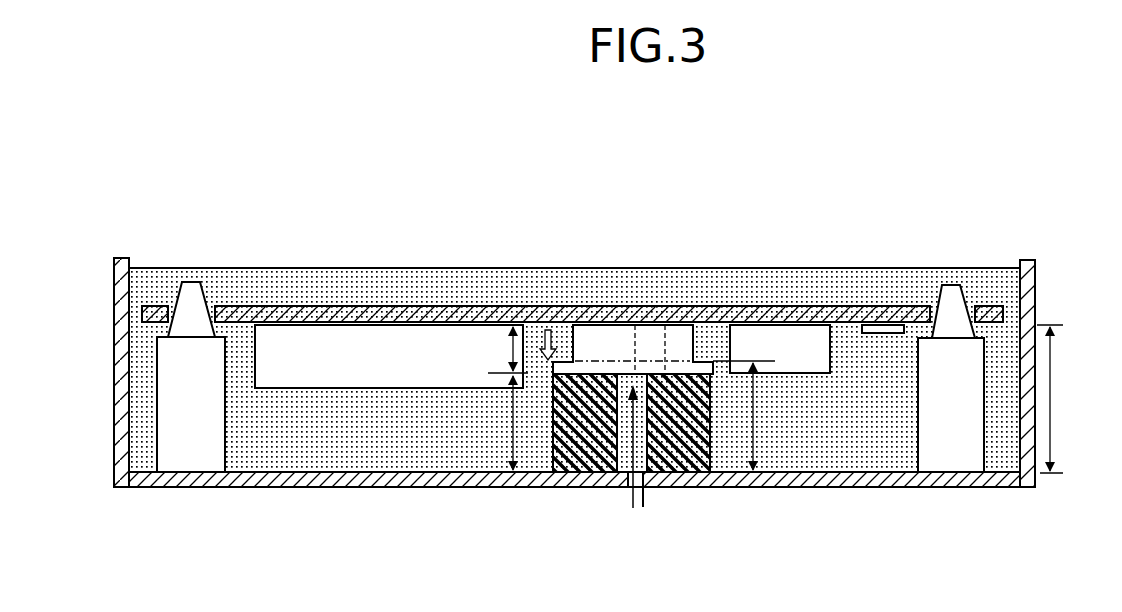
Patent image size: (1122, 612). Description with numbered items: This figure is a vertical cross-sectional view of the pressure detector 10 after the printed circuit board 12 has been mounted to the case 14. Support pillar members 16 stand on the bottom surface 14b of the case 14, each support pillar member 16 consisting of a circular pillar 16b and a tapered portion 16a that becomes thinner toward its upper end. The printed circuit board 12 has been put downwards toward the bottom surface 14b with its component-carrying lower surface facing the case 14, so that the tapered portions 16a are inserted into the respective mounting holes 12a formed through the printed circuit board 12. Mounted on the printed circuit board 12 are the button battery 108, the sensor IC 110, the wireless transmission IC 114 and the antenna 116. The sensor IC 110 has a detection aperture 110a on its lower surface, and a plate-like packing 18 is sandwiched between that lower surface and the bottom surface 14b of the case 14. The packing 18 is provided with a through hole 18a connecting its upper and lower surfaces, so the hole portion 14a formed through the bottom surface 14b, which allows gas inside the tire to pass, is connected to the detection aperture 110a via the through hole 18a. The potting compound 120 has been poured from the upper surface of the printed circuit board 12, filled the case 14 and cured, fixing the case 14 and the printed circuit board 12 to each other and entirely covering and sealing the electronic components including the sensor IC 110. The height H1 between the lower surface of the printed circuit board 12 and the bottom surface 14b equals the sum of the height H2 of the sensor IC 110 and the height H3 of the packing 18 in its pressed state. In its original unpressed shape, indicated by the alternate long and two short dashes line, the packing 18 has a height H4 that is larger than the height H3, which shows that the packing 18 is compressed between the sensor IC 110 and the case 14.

The pressure detector 10 is at (1046, 182).
The printed circuit board 12 is at (407, 306).
The mounting hole 12a is at (204, 292).
The case 14 is at (272, 478).
The hole portion 14a is at (626, 480).
The bottom surface 14b is at (378, 468).
The support pillar member 16 is at (172, 474).
The tapered portion 16a is at (188, 285).
The circular pillar 16b is at (207, 455).
The packing 18 is at (667, 325).
The through hole 18a is at (610, 468).
The button battery 108 is at (445, 365).
The sensor IC 110 is at (585, 327).
The detection aperture 110a is at (637, 325).
The wireless transmission IC 114 is at (810, 362).
The antenna 116 is at (884, 333).
The potting compound 120 is at (335, 285).
The height between printed circuit board lower surface and case bottom surface H1 is at (1062, 399).
The height of sensor IC H2 is at (492, 332).
The height of packing H3 is at (487, 435).
The original height of packing H4 is at (758, 420).